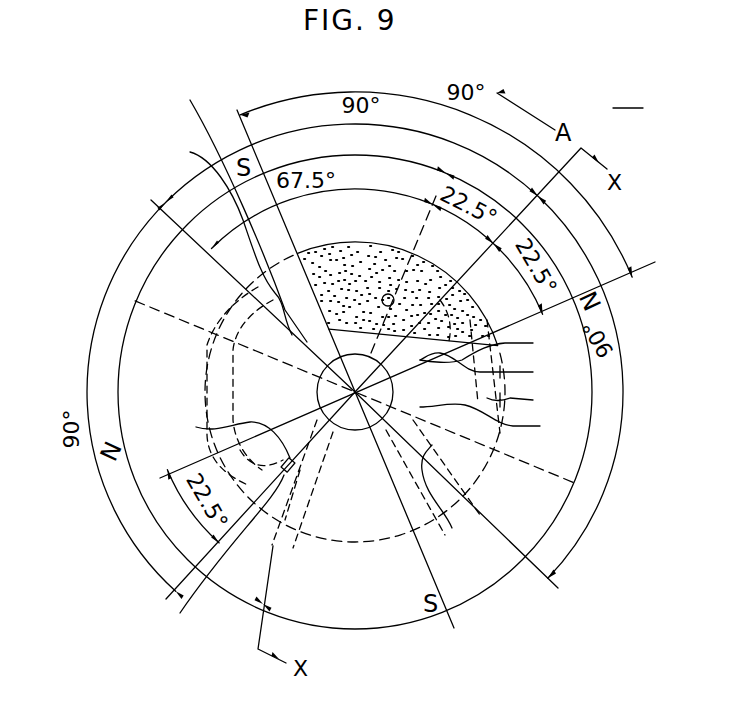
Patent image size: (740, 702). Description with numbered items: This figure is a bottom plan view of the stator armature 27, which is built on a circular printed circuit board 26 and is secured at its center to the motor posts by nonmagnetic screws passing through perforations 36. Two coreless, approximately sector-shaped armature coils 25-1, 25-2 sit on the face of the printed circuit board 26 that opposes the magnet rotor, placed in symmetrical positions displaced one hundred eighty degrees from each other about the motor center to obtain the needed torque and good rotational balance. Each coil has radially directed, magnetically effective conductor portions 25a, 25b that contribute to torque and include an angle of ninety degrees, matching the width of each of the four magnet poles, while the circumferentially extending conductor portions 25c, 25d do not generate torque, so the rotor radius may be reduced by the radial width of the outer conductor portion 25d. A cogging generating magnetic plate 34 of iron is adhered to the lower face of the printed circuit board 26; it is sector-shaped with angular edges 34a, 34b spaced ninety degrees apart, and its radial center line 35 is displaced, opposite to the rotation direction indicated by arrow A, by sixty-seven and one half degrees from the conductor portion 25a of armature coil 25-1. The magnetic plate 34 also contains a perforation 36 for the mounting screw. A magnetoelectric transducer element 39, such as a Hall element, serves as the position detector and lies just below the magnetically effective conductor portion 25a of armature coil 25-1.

The cogging generating magnetic plate 34 is at (352, 262).
The angular edge 34a is at (240, 209).
The angular edge 34b is at (497, 369).
The radial center line 35 is at (417, 224).
The perforation 36 is at (393, 296).
The magnetically effective conductor portion 25a is at (363, 450).
The magnetically effective conductor portion 25b is at (310, 344).
The circumferentially extending conductor portion 25c is at (500, 422).
The circumferentially extending conductor portion 25d is at (531, 400).
The armature coil 25-1 is at (327, 484).
The armature coil 25-2 is at (469, 477).
The printed circuit board 26 is at (275, 525).
The stator armature 27 is at (612, 155).
The magnetoelectric transducer element 39 is at (256, 517).